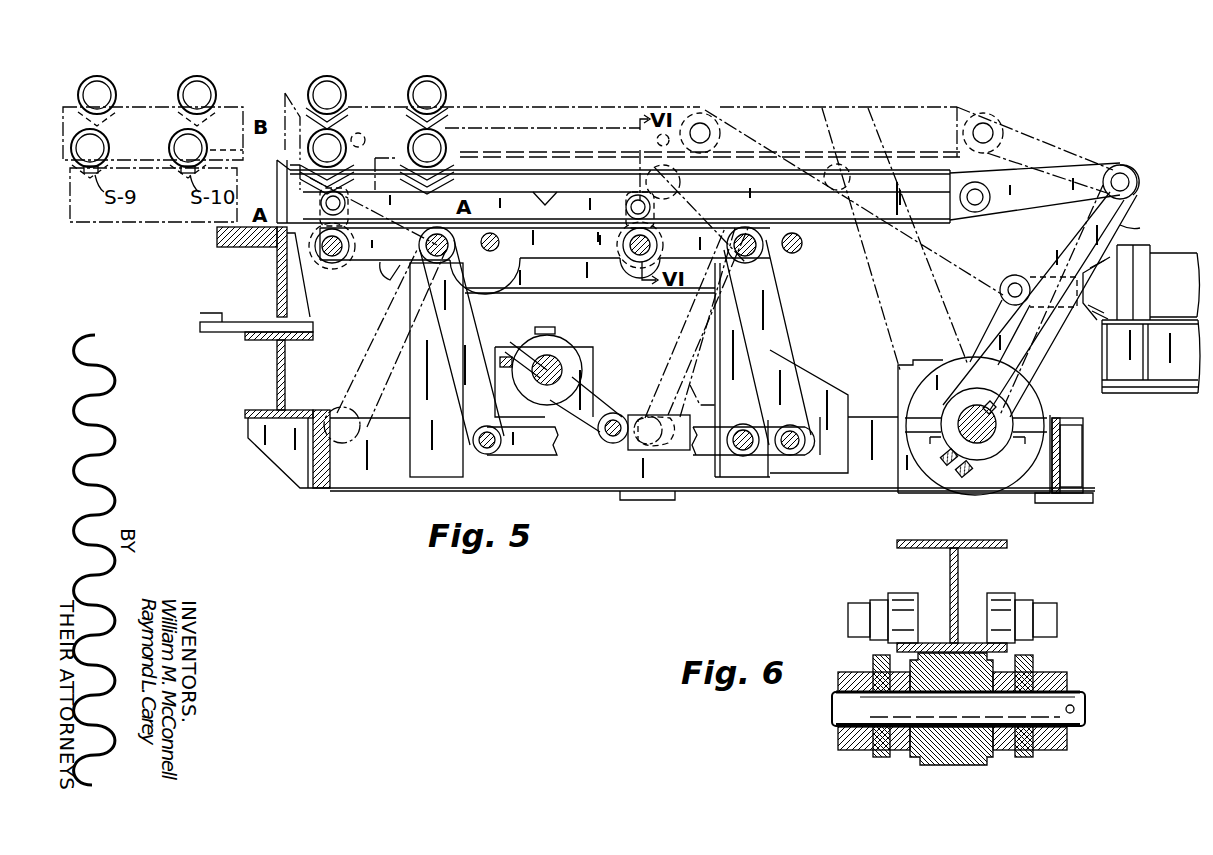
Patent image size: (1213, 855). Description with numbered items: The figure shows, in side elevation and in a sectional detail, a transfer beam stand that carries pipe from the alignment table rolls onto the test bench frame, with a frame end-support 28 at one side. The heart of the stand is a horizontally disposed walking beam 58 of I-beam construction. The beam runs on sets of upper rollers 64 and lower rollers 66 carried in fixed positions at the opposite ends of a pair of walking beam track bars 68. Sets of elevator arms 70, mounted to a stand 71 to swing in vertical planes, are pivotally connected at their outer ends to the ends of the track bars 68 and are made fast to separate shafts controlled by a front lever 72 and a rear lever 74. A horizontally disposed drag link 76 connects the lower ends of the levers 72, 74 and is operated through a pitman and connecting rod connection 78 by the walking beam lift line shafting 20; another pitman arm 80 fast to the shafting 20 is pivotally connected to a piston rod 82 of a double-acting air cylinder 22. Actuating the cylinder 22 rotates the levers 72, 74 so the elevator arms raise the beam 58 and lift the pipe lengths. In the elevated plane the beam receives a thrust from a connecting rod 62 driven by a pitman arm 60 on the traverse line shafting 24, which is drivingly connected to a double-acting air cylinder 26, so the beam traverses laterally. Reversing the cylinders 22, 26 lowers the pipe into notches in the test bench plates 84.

In FIG. 5, the walking beam lift line shafting 20 is at (556, 356).
In FIG. 5, the double-acting air cylinder 22 is at (700, 392).
In FIG. 5, the traverse line shafting 24 is at (960, 412).
In FIG. 5, the double-acting air cylinder 26 is at (1096, 312).
In FIG. 5, the frame end-support 28 is at (277, 284).
In FIG. 5, the walking beam 58 is at (807, 108).
In FIG. 6, the walking beam 58 is at (955, 540).
In FIG. 5, the pitman arm 60 is at (1042, 345).
In FIG. 5, the connecting rod 62 is at (1032, 200).
In FIG. 5, the upper rollers 64 is at (320, 210).
In FIG. 6, the upper rollers 64 is at (910, 593).
In FIG. 5, the lower rollers 66 is at (328, 262).
In FIG. 6, the lower rollers 66 is at (962, 765).
In FIG. 5, the walking beam track bars 68 is at (520, 180).
In FIG. 6, the walking beam track bars 68 is at (880, 757).
In FIG. 5, the elevator arms 70 is at (402, 260).
In FIG. 6, the elevator arms 70 is at (846, 672).
In FIG. 5, the stand 71 is at (720, 326).
In FIG. 5, the front lever 72 is at (797, 354).
In FIG. 5, the rear lever 74 is at (470, 332).
In FIG. 5, the drag link 76 is at (542, 457).
In FIG. 5, the pitman and connecting rod connection 78 is at (612, 445).
In FIG. 5, the pitman arm 80 is at (605, 398).
In FIG. 5, the piston rod 82 is at (644, 416).
In FIG. 5, the test bench plates 84 is at (168, 138).